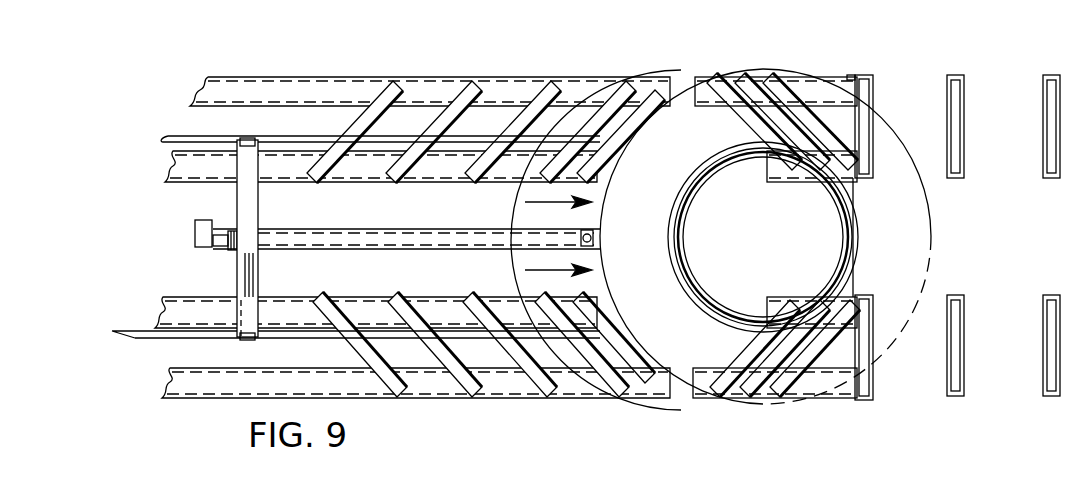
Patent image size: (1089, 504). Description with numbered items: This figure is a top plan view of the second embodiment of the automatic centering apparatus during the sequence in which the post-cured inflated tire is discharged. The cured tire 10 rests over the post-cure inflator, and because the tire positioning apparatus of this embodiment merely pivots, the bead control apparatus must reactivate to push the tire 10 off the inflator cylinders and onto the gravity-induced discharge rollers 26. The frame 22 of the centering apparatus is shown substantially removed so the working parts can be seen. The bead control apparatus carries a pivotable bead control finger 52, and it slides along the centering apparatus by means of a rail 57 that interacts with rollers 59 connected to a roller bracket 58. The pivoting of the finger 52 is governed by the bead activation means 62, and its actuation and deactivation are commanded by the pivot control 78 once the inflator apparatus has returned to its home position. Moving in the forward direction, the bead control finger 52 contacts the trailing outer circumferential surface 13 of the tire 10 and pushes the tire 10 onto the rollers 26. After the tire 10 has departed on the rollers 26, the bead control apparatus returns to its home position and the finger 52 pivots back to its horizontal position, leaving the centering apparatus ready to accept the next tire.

The cured tire 10 is at (688, 342).
The trailing outer circumferential surface 13 is at (560, 272).
The frame 22 is at (230, 78).
The gravity-induced discharge rollers 26 is at (1043, 375).
The bead control finger 52 is at (585, 247).
The rail 57 is at (165, 143).
The roller bracket 58 is at (237, 285).
The rollers 59 is at (232, 333).
The bead activation means 62 is at (195, 240).
The pivot control 78 is at (207, 247).